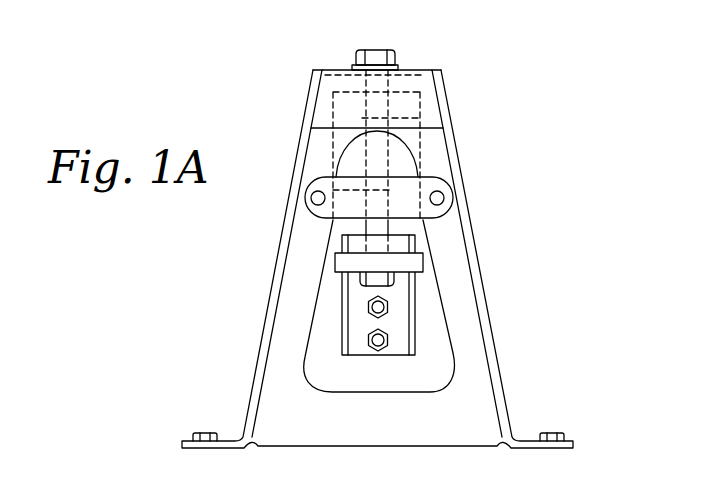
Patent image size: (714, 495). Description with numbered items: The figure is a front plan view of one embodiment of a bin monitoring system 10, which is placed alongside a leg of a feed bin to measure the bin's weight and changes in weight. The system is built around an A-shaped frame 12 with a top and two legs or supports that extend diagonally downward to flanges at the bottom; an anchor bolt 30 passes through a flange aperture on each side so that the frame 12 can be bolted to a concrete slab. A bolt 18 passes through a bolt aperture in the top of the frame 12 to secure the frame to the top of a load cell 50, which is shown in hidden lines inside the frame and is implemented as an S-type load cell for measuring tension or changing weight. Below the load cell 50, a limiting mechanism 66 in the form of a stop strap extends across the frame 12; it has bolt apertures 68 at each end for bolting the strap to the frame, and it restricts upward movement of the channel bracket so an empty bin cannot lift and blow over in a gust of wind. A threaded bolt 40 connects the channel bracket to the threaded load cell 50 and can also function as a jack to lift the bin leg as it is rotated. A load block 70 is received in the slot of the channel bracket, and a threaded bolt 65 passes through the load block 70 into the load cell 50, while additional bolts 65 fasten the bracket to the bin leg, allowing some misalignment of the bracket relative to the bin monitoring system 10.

The bin monitoring system 10 is at (255, 112).
The frame 12 is at (499, 340).
The bolt 18 is at (380, 51).
The anchor bolt 30 is at (204, 433).
The threaded bolt 40 is at (345, 278).
The load cell 50 is at (425, 100).
The threaded bolt 65 is at (367, 303).
The limiting mechanism 66 is at (441, 181).
The bolt apertures 68 is at (311, 198).
The load block 70 is at (424, 259).